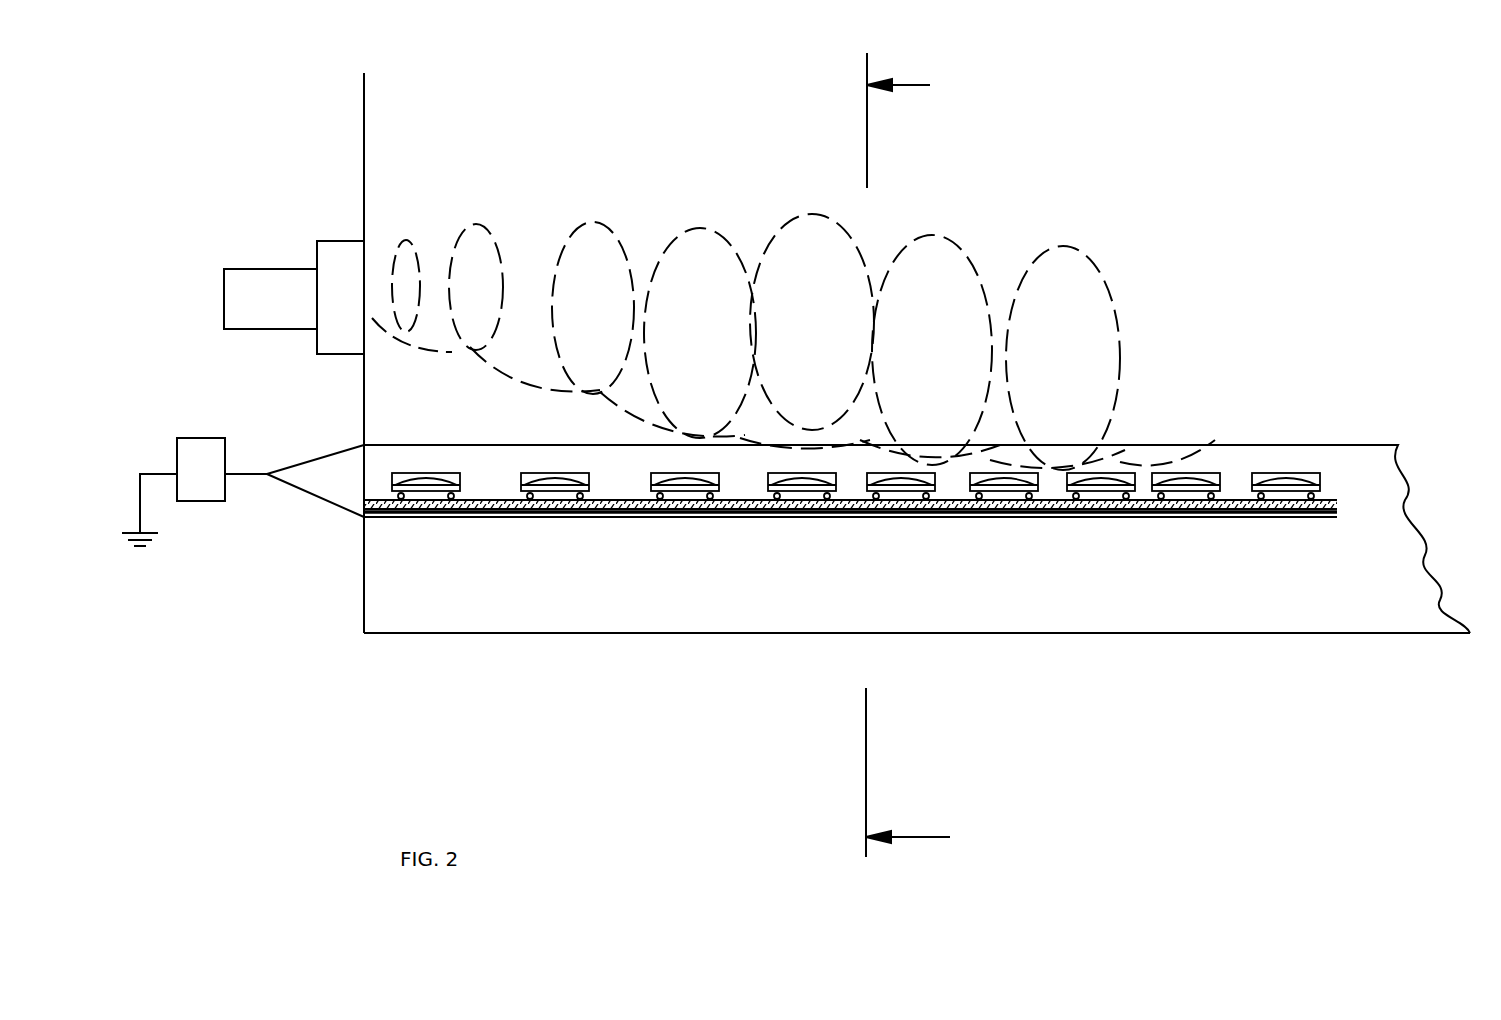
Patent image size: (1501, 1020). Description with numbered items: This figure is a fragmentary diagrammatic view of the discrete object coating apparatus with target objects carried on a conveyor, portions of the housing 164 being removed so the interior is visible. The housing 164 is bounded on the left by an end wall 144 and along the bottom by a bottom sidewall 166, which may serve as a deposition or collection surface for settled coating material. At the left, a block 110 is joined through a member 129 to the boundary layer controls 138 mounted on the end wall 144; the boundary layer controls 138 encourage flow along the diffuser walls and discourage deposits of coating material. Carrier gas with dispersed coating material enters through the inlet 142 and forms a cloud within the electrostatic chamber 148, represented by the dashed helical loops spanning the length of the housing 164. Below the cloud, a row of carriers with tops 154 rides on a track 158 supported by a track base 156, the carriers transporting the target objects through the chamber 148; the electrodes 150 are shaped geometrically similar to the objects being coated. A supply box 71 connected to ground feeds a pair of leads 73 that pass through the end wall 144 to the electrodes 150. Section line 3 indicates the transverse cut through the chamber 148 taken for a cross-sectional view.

The section line 3- 3 is at (917, 455).
The power supply 71 is at (207, 501).
The electrical leads 73 is at (318, 456).
The motor 110 is at (245, 268).
The drive shaft 129 is at (337, 260).
The boundary layer controls 138 is at (338, 240).
The inlet 142 is at (364, 294).
The end wall 144 is at (364, 396).
The electrostatic chamber 148 is at (832, 342).
The electrodes 150 is at (448, 500).
The carrier tops 154 is at (545, 476).
The track base 156 is at (862, 513).
The track 158 is at (618, 518).
The housing 164 is at (514, 633).
The bottom sidewall 166 is at (378, 633).